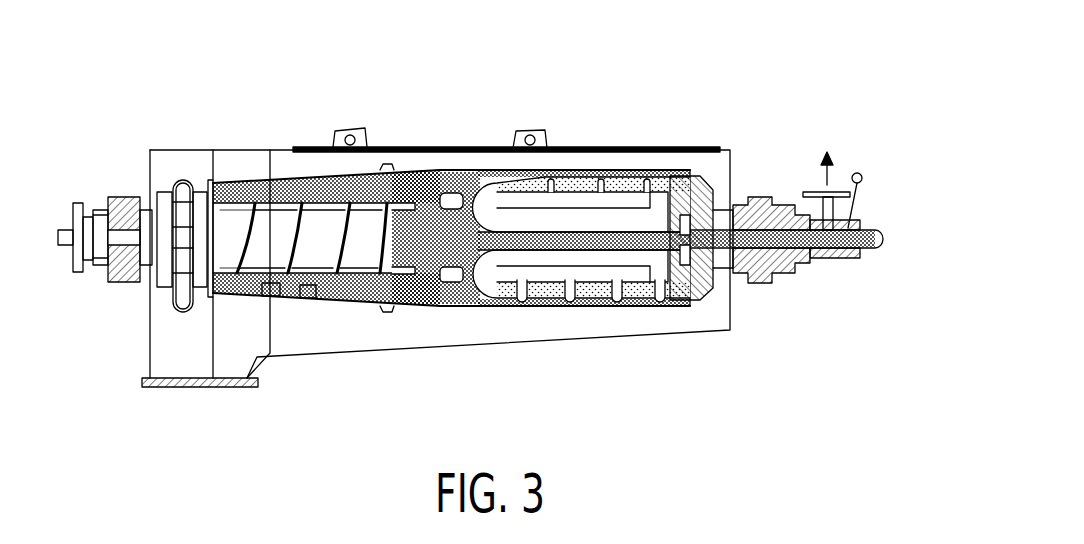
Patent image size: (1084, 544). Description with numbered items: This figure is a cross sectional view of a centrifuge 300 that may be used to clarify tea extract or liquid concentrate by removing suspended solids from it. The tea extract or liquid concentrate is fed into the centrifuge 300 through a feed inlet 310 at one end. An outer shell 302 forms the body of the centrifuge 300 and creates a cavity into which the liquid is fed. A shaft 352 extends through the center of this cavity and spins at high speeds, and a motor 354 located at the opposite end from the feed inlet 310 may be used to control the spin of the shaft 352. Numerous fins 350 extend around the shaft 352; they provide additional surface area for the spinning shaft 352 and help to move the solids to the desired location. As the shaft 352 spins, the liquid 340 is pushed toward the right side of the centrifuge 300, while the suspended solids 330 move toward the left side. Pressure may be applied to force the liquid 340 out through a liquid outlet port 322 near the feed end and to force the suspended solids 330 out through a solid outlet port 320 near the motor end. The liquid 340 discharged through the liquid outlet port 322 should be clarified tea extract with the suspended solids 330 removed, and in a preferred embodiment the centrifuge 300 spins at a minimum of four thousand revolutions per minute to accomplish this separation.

The centrifuge 300 is at (130, 118).
The outer shell 302 is at (600, 158).
The feed inlet 310 is at (887, 240).
The solid outlet port 320 is at (183, 316).
The liquid outlet port 322 is at (820, 192).
The suspended solids 330 is at (272, 290).
The liquid 340 is at (650, 293).
The fins 350 is at (347, 222).
The shaft 352 is at (367, 222).
The motor 354 is at (174, 170).